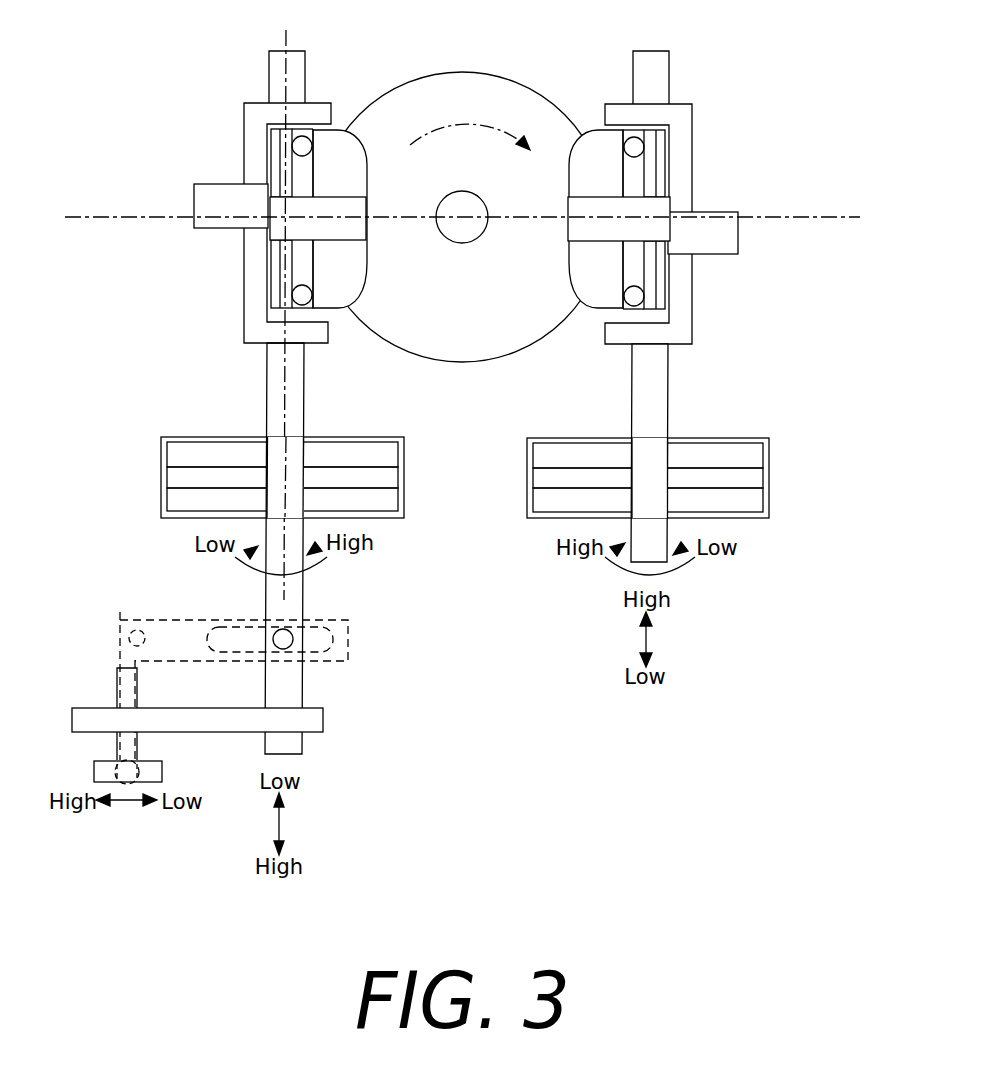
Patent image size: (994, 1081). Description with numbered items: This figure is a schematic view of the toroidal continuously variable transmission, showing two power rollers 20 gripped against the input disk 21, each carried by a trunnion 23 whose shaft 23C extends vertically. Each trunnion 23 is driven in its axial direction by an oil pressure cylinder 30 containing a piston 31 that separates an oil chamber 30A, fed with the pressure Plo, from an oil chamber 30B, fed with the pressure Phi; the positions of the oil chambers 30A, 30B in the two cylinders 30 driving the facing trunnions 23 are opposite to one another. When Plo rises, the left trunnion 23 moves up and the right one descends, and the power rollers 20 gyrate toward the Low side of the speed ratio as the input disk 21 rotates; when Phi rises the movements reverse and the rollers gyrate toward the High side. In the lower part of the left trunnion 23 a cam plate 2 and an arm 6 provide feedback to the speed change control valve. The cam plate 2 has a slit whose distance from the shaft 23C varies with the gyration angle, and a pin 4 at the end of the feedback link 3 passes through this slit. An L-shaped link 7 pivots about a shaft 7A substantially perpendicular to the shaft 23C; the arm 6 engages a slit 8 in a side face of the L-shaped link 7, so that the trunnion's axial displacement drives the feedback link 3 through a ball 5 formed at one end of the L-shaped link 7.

The cam plate 2 is at (332, 723).
The feedback link 3 is at (94, 768).
The pin 4 is at (117, 697).
The ball 5 is at (117, 808).
The arm 6 is at (283, 630).
The L-shaped link 7 is at (362, 632).
The shaft 7A is at (122, 612).
The slit 8 is at (348, 662).
The power roller 20 is at (598, 153).
The input disk 21 is at (457, 95).
The trunnion 23 is at (236, 295).
The shaft 23C is at (285, 42).
The oil pressure cylinder 30 is at (482, 494).
The oil chamber 30A is at (222, 503).
The oil chamber 30B is at (195, 452).
The piston 31 is at (370, 478).